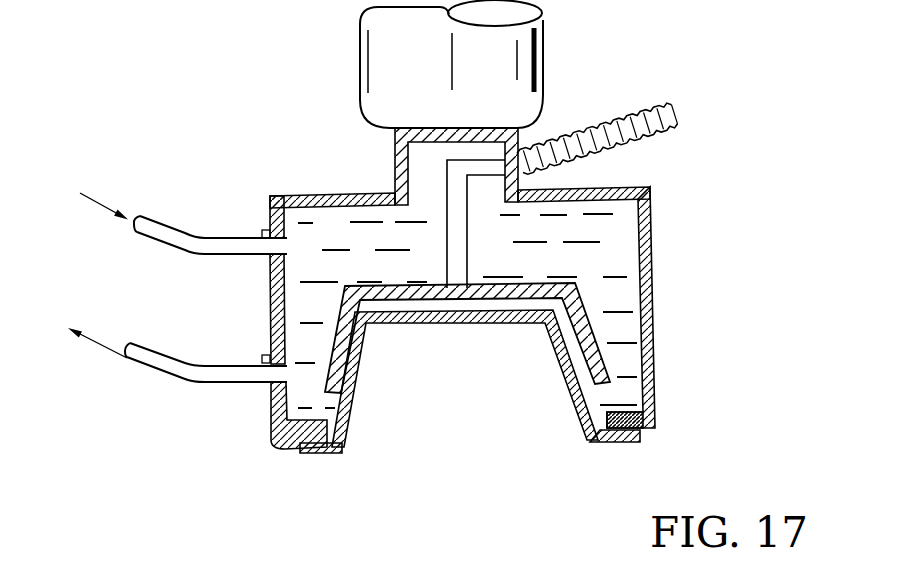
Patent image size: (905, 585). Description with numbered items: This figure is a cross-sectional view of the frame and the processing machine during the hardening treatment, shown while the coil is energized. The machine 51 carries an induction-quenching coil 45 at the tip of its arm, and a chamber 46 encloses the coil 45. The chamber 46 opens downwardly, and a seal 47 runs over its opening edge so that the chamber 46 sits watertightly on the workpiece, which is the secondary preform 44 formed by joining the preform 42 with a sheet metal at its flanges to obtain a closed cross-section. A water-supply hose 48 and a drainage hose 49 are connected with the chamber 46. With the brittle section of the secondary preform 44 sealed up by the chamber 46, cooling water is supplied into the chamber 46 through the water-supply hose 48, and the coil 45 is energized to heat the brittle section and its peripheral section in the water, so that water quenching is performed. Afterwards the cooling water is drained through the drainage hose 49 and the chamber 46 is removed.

The preform 42 is at (470, 404).
The secondary preform 44 is at (353, 422).
The induction-quenching coil 45 is at (370, 285).
The chamber 46 is at (653, 332).
The seal 47 is at (657, 427).
The water-supply hose 48 is at (181, 231).
The drainage hose 49 is at (187, 366).
The machine 51 is at (543, 32).